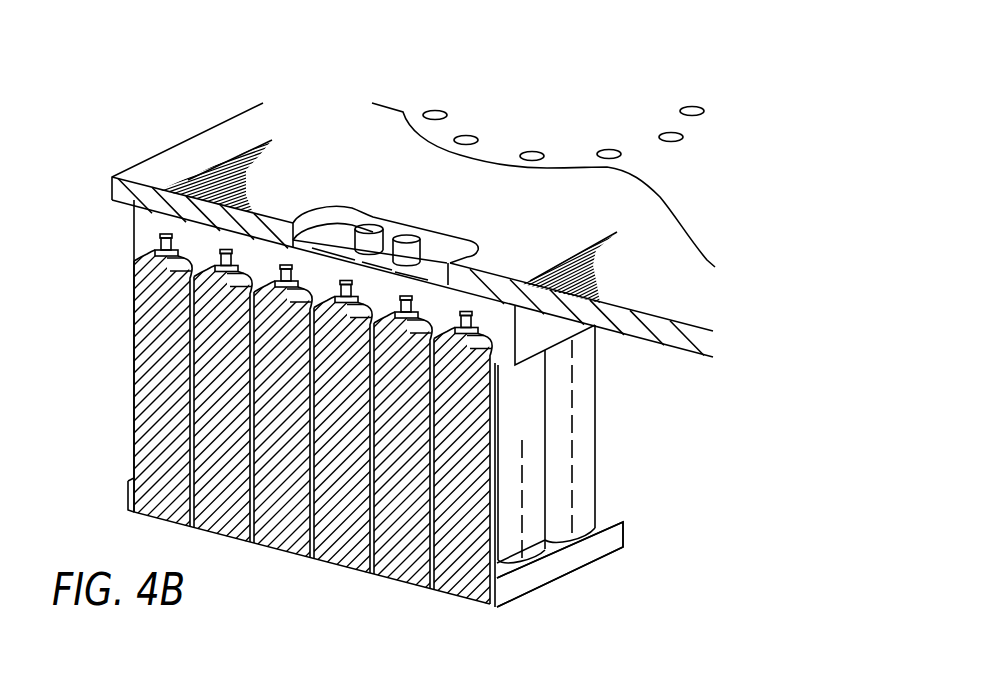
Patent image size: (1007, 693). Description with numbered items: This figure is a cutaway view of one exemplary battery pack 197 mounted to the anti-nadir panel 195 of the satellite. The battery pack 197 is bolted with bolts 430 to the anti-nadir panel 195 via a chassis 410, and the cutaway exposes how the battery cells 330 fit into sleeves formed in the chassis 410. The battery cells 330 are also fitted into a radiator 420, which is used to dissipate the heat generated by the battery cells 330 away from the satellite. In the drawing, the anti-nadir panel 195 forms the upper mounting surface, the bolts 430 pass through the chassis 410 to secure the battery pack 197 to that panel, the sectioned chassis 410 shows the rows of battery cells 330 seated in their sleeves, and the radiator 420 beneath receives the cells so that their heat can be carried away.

The anti-nadir panel 195 is at (147, 130).
The chassis 410 is at (142, 228).
The bolts 430 is at (368, 228).
The battery cells 330 is at (588, 426).
The radiator 420 is at (610, 577).
The battery pack 197 is at (556, 604).